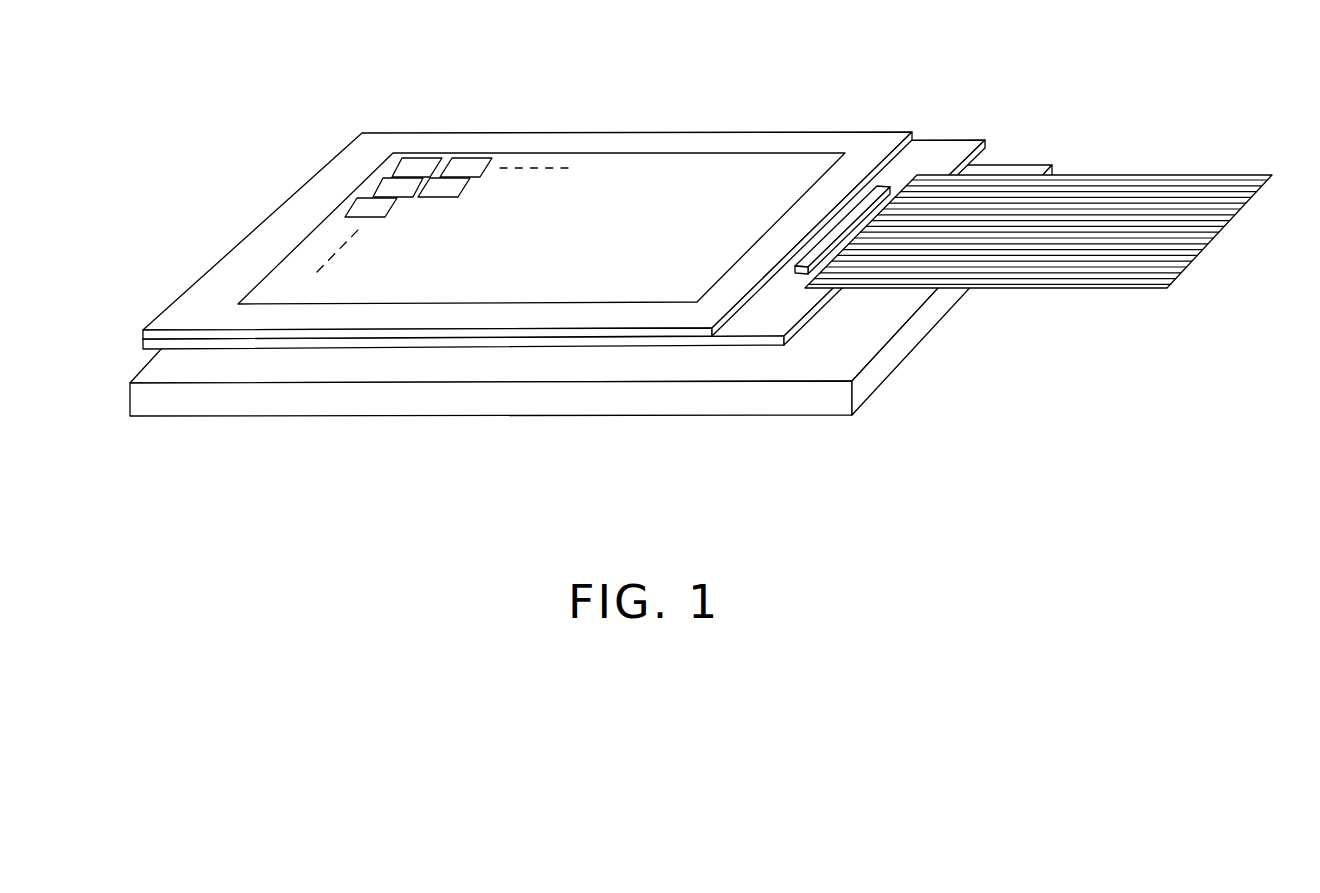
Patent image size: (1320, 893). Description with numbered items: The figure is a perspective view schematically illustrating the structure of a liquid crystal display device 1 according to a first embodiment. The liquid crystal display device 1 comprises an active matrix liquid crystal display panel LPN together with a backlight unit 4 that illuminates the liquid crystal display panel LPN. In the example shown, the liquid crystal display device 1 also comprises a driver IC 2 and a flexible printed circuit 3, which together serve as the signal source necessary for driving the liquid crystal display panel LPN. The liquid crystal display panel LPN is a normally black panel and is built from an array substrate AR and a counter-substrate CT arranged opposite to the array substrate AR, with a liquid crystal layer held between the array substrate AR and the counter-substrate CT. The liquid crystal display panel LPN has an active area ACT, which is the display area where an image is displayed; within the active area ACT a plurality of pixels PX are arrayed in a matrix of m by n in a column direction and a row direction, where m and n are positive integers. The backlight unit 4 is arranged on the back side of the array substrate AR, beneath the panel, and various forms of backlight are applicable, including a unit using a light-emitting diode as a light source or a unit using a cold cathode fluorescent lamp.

The liquid crystal display device 1 is at (705, 266).
The driver IC 2 is at (874, 182).
The flexible printed circuit 3 is at (1201, 176).
The backlight unit 4 is at (153, 405).
The pixel PX is at (424, 154).
The active area ACT is at (465, 308).
The counter-substrate CT is at (562, 333).
The array substrate AR is at (633, 345).
The liquid crystal display panel LPN is at (564, 277).